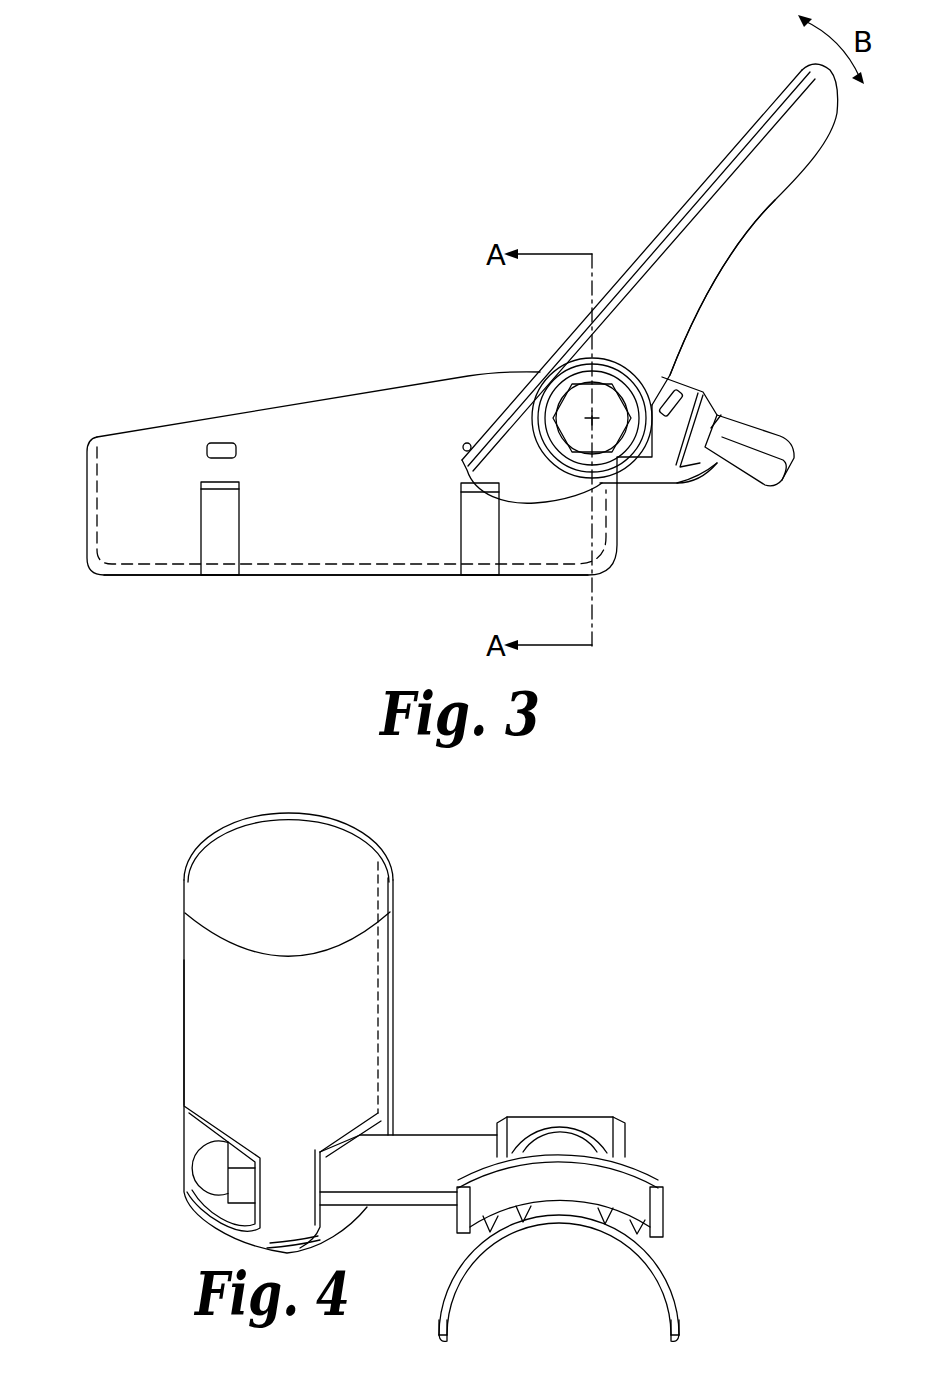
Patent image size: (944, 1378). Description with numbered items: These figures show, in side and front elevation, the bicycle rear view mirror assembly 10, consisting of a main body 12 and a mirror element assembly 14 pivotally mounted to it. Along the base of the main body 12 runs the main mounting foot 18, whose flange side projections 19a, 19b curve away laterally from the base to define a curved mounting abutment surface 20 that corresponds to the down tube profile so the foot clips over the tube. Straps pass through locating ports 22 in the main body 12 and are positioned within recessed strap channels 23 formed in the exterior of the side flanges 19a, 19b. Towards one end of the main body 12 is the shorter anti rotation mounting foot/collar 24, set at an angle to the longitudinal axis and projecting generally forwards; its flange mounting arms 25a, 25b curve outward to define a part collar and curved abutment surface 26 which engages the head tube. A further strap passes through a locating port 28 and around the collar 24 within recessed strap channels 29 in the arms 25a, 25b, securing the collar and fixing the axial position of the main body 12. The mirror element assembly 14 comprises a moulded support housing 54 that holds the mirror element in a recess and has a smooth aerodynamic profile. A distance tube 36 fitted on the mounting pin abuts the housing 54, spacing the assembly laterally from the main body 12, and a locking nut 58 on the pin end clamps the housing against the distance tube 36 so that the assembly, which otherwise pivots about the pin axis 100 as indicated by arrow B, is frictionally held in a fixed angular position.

In FIG. 3, the rear view mirror assembly 10 is at (198, 239).
In FIG. 4, the rear view mirror assembly 10 is at (622, 960).
In FIG. 3, the main body 12 is at (180, 415).
In FIG. 4, the main body 12 is at (612, 1104).
In FIG. 3, the mirror element assembly 14 is at (792, 185).
In FIG. 4, the mirror element assembly 14 is at (170, 966).
In FIG. 3, the main mounting foot 18 is at (160, 538).
In FIG. 4, the main mounting foot 18 is at (668, 1290).
In FIG. 4, the flange side projection 19a is at (453, 1308).
In FIG. 4, the flange side projection 19b is at (662, 1317).
In FIG. 4, the curved mounting abutment surface 20 is at (480, 1260).
In FIG. 3, the locating port 22 is at (462, 442).
In FIG. 3, the recessed strap channel 23 is at (221, 556).
In FIG. 3, the anti rotation mounting foot/collar 24 is at (705, 393).
In FIG. 4, the anti rotation mounting foot/collar 24 is at (575, 1147).
In FIG. 4, the flange mounting arm 25a is at (460, 1218).
In FIG. 4, the flange mounting arm 25b is at (660, 1218).
In FIG. 4, the curved abutment surface 26 is at (622, 1193).
In FIG. 3, the locating port 28 is at (678, 396).
In FIG. 3, the recessed strap channel 29 is at (765, 460).
In FIG. 4, the distance tube 36 is at (420, 1150).
In FIG. 3, the support housing 54 is at (670, 328).
In FIG. 4, the support housing 54 is at (301, 1059).
In FIG. 3, the locking nut 58 is at (608, 432).
In FIG. 4, the locking nut 58 is at (213, 1175).
In FIG. 3, the pin axis 100 is at (589, 415).